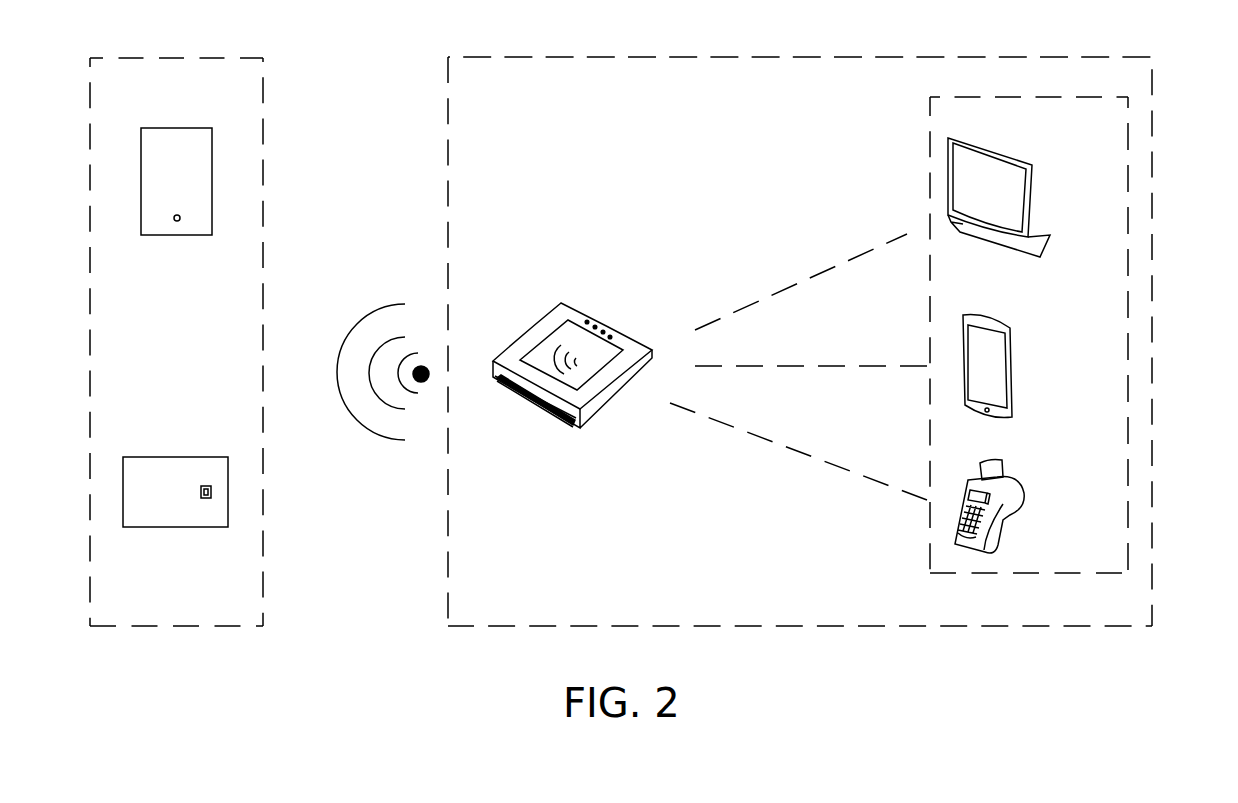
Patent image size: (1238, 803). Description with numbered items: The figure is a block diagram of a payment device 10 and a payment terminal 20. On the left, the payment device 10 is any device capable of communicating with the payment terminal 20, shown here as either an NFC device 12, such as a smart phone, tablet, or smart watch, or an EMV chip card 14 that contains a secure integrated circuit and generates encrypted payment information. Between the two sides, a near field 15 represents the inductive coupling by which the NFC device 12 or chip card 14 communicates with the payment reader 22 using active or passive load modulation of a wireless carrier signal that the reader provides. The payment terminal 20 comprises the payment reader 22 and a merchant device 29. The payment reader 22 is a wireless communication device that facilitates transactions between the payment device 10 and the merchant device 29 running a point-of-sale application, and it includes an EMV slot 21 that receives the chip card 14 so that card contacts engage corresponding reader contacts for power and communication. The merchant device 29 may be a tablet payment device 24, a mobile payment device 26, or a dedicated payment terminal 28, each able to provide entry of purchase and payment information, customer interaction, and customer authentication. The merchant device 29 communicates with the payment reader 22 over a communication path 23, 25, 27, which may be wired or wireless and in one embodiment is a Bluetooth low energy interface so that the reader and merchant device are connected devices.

The payment device 10 is at (165, 56).
The NFC device 12 is at (197, 127).
The EMV chip card 14 is at (200, 457).
The near field 15 is at (384, 282).
The payment terminal 20 is at (807, 628).
The EMV slot 21 is at (525, 410).
The payment reader 22 is at (580, 376).
The communication path 23 is at (847, 262).
The tablet payment device 24 is at (1025, 160).
The communication path 25 is at (862, 366).
The mobile payment device 26 is at (1012, 342).
The communication path 27 is at (856, 475).
The payment terminal 28 is at (1024, 483).
The merchant device 29 is at (1003, 575).